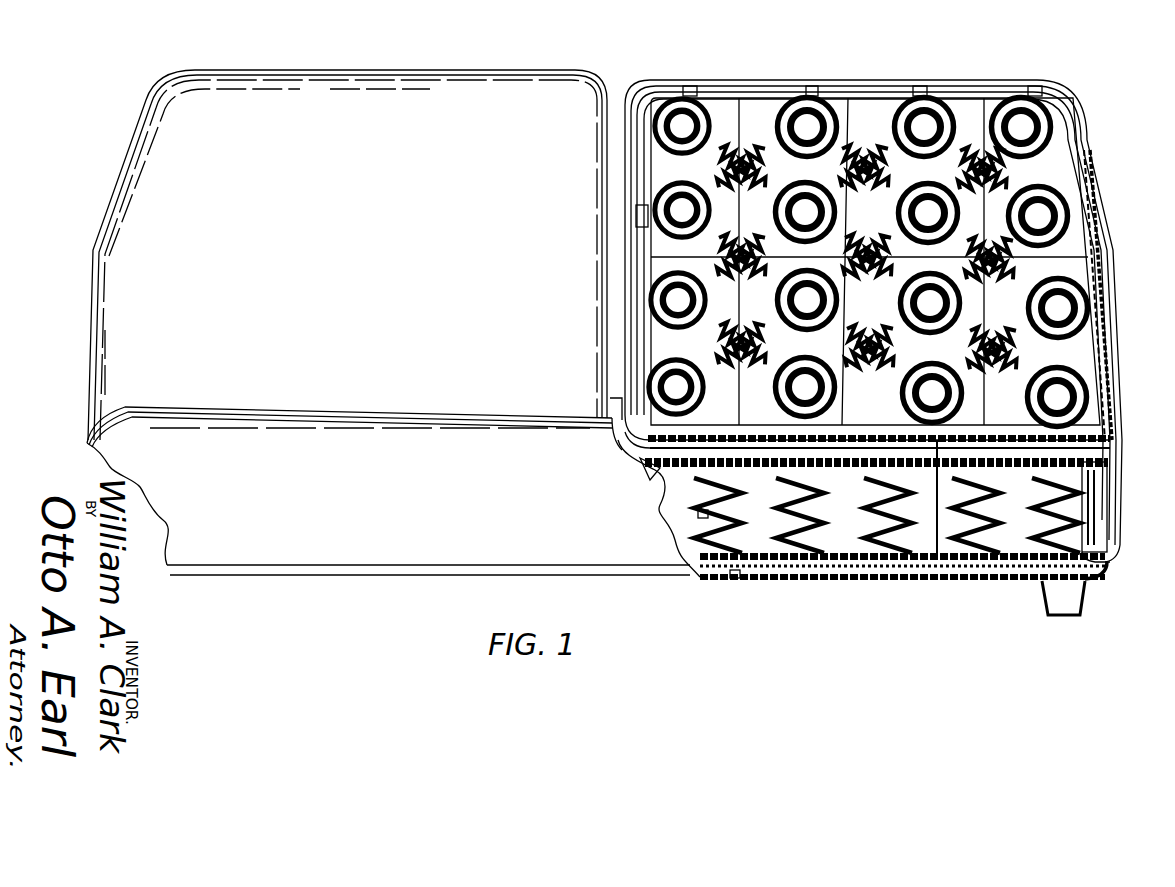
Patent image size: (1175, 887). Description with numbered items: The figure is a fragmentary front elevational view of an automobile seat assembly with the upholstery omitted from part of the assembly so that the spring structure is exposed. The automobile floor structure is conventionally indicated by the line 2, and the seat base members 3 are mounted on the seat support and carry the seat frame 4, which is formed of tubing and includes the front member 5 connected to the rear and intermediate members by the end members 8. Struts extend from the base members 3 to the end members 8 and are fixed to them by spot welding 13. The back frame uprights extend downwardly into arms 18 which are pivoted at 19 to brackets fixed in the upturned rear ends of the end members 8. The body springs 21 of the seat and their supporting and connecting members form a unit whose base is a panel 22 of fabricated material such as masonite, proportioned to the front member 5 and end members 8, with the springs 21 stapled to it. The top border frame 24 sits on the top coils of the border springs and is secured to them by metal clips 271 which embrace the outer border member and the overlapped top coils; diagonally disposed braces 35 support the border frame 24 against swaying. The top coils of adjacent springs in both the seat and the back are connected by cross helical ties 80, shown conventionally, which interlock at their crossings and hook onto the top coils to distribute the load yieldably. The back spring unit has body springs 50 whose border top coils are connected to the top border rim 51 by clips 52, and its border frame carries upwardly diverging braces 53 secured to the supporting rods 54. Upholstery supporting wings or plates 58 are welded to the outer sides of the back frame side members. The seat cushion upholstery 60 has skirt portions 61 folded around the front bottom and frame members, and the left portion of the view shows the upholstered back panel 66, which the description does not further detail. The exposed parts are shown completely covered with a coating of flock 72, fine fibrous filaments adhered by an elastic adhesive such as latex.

The automobile floor structure line 2 is at (845, 163).
The seat base members 3 is at (1058, 615).
The seat frame 4 is at (1106, 588).
The front member 5 is at (778, 595).
The end members 8 is at (807, 480).
The spot welding 13 is at (1060, 266).
The arms 18 is at (1108, 465).
The pivot 19 is at (1110, 522).
The body springs 21 is at (813, 520).
The base panel 22 is at (742, 550).
The top border frame 24 is at (660, 477).
The diagonally disposed braces 35 is at (990, 515).
The body springs 50 is at (1040, 128).
The top border rim 51 is at (745, 318).
The clips 52 is at (920, 86).
The upwardly diverging braces 53 is at (742, 103).
The supporting rods 54 is at (665, 250).
The upholstery supporting wings or plates 58 is at (1122, 355).
The seat cushion upholstery 60 is at (415, 409).
The skirt portions 61 is at (515, 455).
The upper panel frame 66 is at (156, 164).
The flock 72 is at (722, 92).
The cross helical ties 80 is at (957, 160).
The metal clips 271 is at (648, 462).